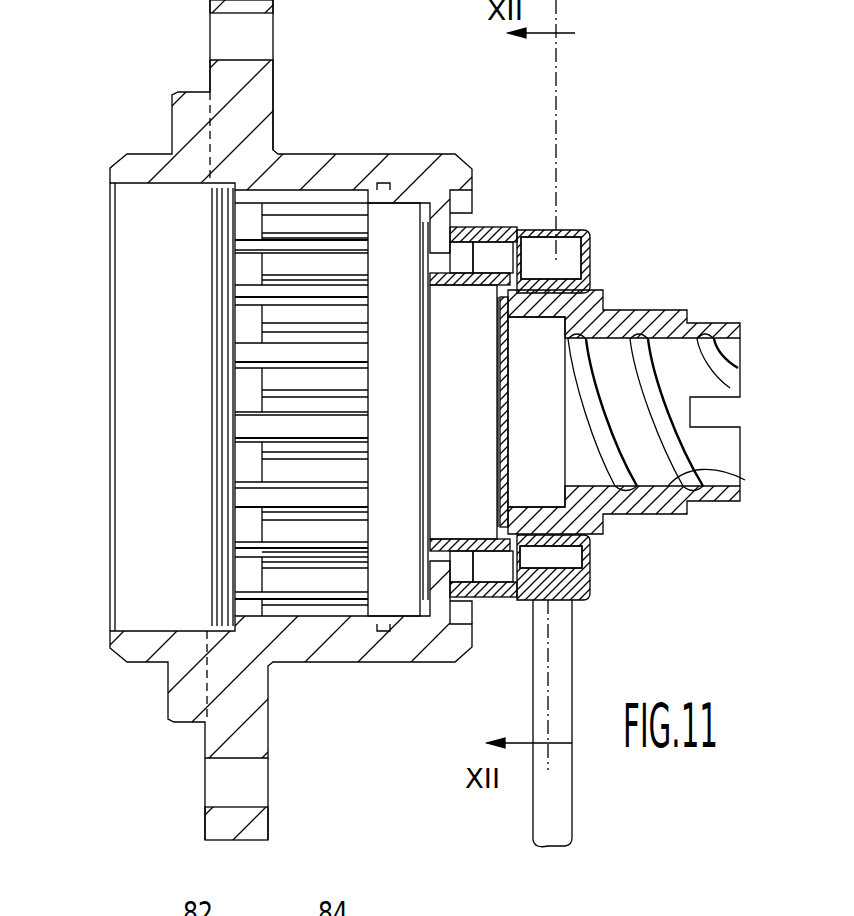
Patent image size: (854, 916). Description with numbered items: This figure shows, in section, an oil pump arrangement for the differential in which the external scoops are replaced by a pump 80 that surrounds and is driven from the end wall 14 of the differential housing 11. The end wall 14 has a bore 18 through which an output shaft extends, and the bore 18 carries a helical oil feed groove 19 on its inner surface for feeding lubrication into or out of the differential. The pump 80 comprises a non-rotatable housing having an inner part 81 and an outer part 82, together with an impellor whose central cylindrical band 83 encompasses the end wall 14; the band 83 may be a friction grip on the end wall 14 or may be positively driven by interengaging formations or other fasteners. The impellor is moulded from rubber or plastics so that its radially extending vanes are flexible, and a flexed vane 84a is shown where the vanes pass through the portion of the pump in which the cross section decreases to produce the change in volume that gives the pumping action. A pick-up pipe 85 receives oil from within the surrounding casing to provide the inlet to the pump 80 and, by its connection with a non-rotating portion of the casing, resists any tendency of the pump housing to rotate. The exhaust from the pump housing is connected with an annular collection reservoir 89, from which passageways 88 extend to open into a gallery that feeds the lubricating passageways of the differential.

The housing 11 is at (317, 165).
The end wall 14 is at (655, 505).
The bore 18 is at (745, 480).
The helical oil feed groove 19 is at (720, 383).
The pump 80 is at (550, 250).
The inner part 81 is at (494, 592).
The outer part 82 is at (592, 272).
The central cylindrical band 83 is at (567, 549).
The flexed vane 84a is at (556, 566).
The pick-up pipe 85 is at (546, 708).
The passageways 88 is at (455, 270).
The annular collection reservoir 89 is at (493, 240).